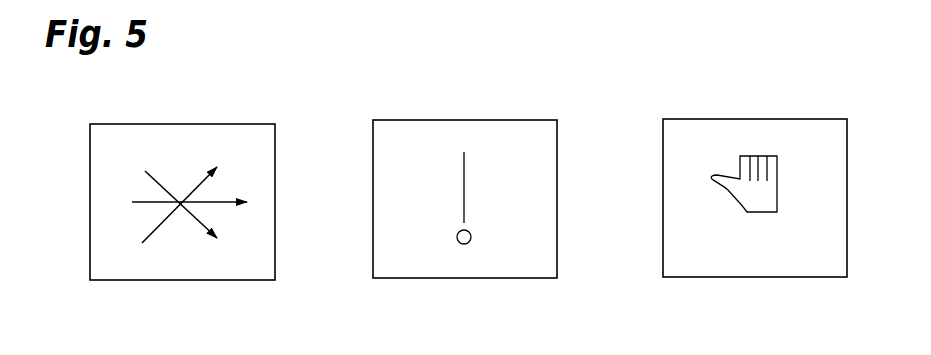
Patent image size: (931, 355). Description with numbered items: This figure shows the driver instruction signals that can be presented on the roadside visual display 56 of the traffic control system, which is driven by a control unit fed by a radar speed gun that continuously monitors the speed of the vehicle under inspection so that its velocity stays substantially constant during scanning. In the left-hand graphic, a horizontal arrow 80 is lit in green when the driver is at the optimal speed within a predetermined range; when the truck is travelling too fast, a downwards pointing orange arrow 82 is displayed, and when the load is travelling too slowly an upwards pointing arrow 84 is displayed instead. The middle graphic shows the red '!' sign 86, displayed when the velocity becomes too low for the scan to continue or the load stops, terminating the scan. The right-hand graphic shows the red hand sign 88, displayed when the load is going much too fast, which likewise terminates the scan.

The visual display 56 is at (273, 157).
The horizontal arrow 80 is at (152, 202).
The downwards pointing arrow 82 is at (162, 183).
The upwards pointing arrow 84 is at (157, 230).
The red '!' sign 86 is at (508, 157).
The red hand sign 88 is at (749, 133).